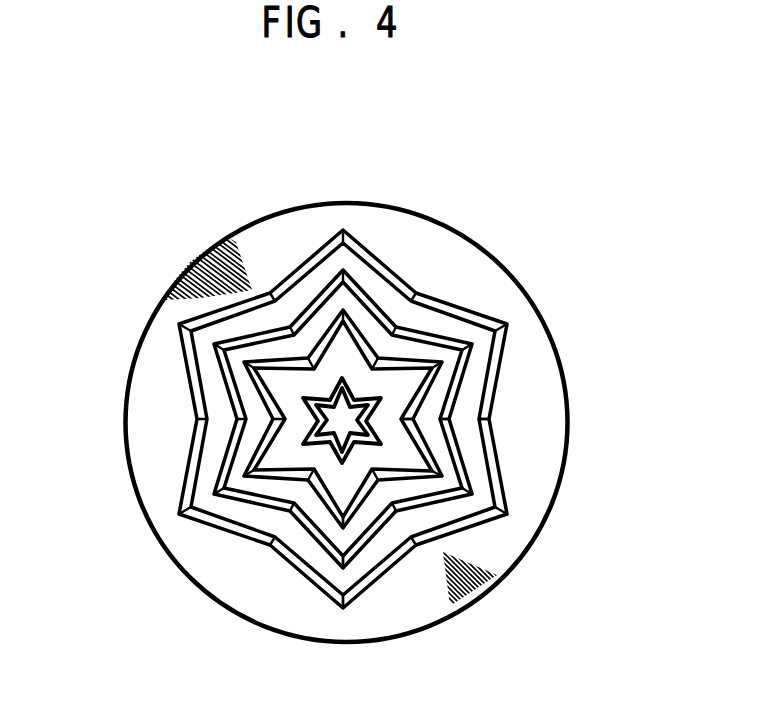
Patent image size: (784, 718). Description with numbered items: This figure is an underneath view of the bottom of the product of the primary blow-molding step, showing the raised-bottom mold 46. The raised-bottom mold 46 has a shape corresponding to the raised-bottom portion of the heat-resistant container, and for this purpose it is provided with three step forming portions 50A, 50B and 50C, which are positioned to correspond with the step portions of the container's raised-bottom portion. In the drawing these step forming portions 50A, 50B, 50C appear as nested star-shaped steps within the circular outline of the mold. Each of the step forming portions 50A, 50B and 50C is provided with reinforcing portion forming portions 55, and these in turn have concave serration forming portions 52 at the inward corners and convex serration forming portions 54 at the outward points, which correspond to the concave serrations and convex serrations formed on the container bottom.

The raised-bottom mold 46 is at (465, 240).
The reinforcing portion forming portions 55 is at (474, 306).
The concave serration forming portions 52 is at (416, 418).
The convex serration forming portions 54 is at (342, 608).
The step forming portion 50A is at (253, 438).
The step forming portion 50B is at (205, 473).
The step forming portion 50C is at (177, 542).